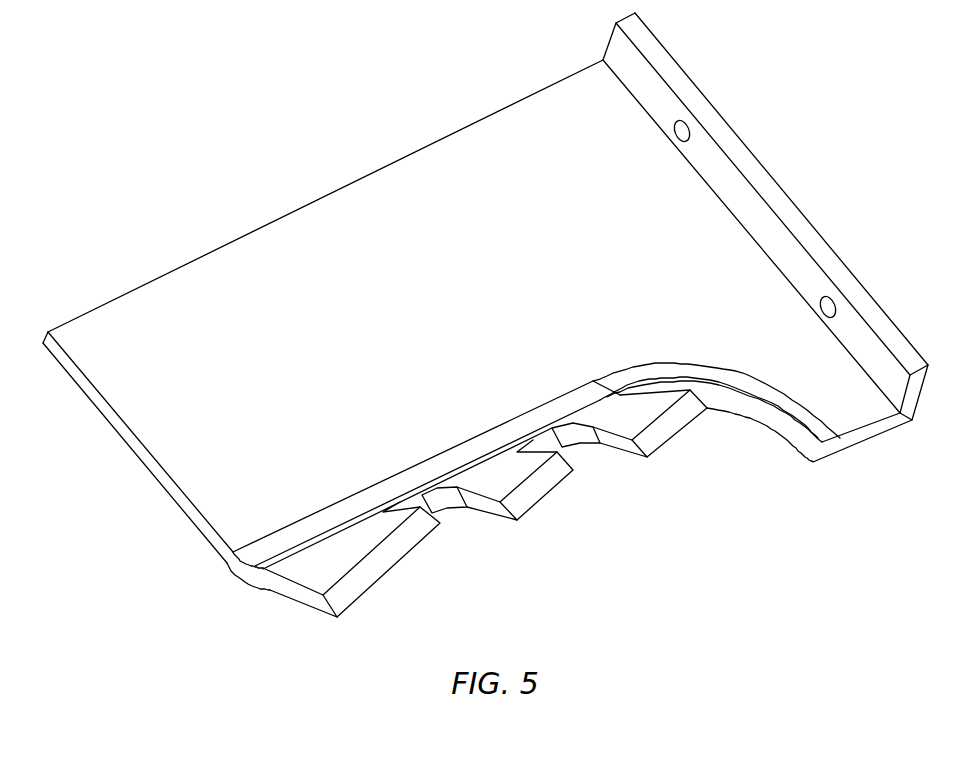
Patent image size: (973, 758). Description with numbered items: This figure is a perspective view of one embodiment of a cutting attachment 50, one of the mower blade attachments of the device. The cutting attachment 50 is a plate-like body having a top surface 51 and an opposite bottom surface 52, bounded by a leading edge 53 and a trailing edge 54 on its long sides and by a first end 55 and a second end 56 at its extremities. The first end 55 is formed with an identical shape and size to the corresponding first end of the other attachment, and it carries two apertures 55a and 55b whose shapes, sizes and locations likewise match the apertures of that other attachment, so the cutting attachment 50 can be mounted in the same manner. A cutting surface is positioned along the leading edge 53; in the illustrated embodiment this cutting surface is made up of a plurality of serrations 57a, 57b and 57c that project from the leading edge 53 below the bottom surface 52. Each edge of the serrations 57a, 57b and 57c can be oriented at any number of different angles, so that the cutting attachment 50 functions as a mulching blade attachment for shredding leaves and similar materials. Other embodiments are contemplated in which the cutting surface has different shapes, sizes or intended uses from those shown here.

The cutting attachment 50 is at (182, 106).
The top surface 51 is at (474, 307).
The bottom surface 52 is at (143, 463).
The leading edge 53 is at (870, 432).
The trailing edge 54 is at (326, 194).
The first end 55 is at (753, 224).
The aperture 55a is at (679, 134).
The aperture 55b is at (820, 308).
The second end 56 is at (103, 407).
The serration 57a is at (383, 566).
The serration 57b is at (537, 490).
The serration 57c is at (665, 432).